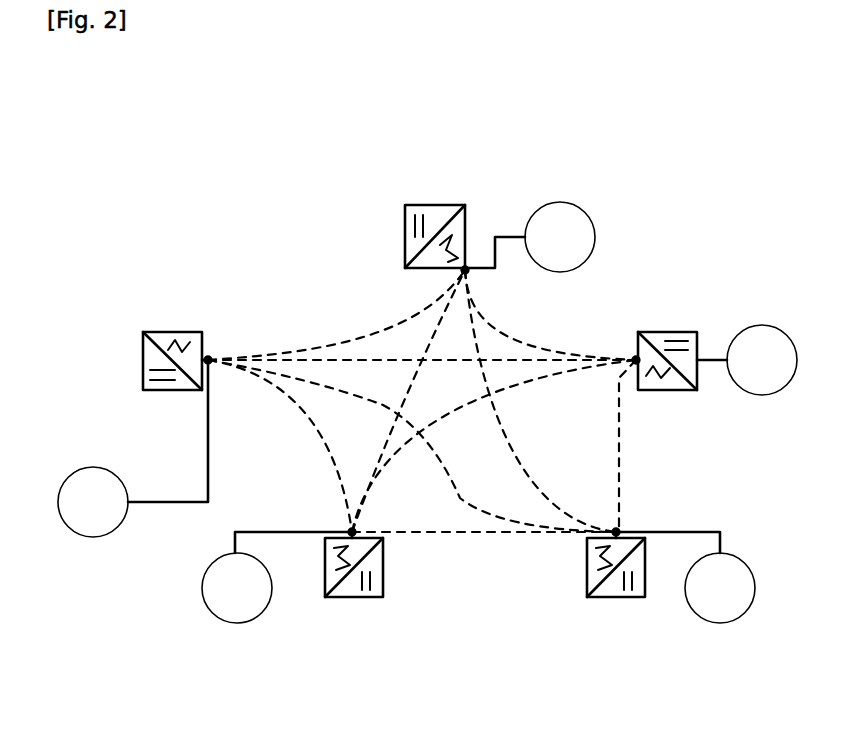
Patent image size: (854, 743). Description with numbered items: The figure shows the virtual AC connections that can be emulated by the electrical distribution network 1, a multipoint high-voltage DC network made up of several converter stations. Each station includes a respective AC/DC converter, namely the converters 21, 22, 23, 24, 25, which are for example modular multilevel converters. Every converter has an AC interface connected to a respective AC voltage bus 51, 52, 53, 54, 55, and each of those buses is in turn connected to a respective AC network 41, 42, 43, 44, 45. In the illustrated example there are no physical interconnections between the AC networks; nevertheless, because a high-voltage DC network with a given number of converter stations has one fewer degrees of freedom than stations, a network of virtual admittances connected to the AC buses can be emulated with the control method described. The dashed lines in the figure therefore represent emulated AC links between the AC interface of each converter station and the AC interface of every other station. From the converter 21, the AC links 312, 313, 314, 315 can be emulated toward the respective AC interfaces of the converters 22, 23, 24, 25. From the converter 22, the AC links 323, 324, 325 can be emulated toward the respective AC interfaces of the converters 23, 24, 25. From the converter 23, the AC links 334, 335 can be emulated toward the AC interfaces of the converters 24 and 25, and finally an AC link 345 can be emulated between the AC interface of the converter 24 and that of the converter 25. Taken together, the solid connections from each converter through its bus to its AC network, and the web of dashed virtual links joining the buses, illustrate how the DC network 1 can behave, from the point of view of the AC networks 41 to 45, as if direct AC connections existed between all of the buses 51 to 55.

The electrical distribution network 1 is at (676, 130).
The converter 21 is at (143, 352).
The converter 22 is at (357, 598).
The converter 23 is at (614, 598).
The converter 24 is at (668, 392).
The converter 25 is at (432, 205).
The AC network 41 is at (93, 538).
The AC network 42 is at (237, 624).
The AC network 43 is at (722, 624).
The AC network 44 is at (762, 396).
The AC network 45 is at (578, 203).
The AC voltage bus 51 is at (208, 356).
The AC voltage bus 52 is at (363, 600).
The AC voltage bus 53 is at (643, 578).
The AC voltage bus 54 is at (633, 365).
The AC voltage bus 55 is at (466, 266).
The AC link 312 is at (310, 418).
The AC link 313 is at (300, 403).
The AC link 314 is at (405, 330).
The AC link 315 is at (365, 358).
The AC link 323 is at (428, 536).
The AC link 324 is at (380, 485).
The AC link 325 is at (385, 448).
The AC link 334 is at (622, 492).
The AC link 335 is at (527, 473).
The AC link 345 is at (545, 347).